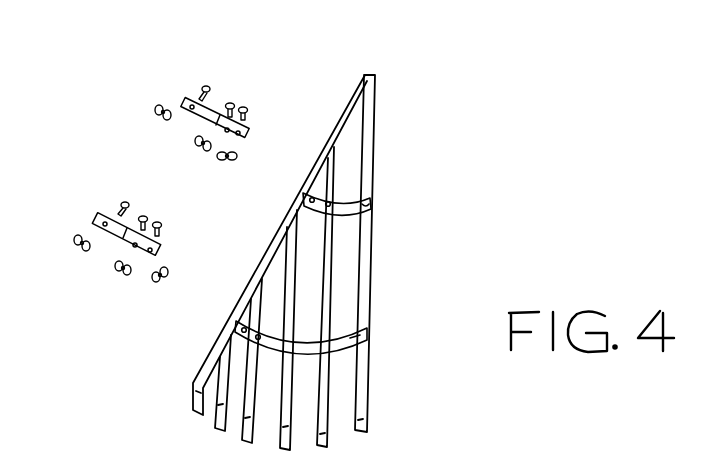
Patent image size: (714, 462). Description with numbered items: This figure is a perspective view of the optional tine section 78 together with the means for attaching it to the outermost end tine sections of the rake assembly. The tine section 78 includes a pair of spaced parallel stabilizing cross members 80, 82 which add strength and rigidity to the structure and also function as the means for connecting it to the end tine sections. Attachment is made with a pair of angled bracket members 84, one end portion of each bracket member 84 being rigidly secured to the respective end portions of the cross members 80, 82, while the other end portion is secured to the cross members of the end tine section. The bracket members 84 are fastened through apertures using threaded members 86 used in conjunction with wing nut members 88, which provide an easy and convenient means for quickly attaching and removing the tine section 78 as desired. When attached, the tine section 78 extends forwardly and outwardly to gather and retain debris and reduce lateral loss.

The optional tine section 78 is at (413, 280).
The stabilizing cross member 80 is at (373, 203).
The stabilizing cross member 82 is at (368, 335).
The angled bracket member 84 is at (181, 100).
The threaded member 86 is at (239, 100).
The wing nut member 88 is at (200, 143).